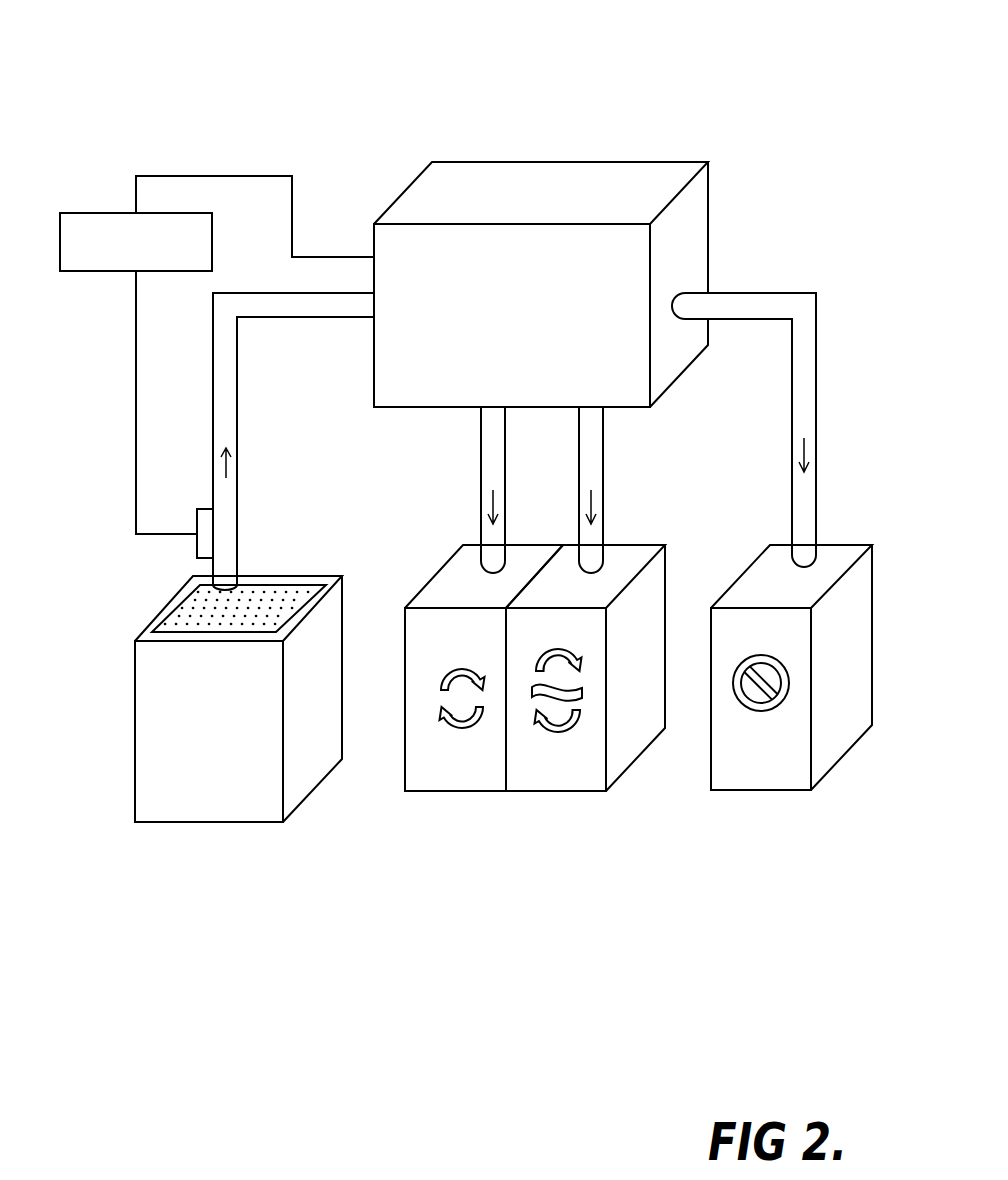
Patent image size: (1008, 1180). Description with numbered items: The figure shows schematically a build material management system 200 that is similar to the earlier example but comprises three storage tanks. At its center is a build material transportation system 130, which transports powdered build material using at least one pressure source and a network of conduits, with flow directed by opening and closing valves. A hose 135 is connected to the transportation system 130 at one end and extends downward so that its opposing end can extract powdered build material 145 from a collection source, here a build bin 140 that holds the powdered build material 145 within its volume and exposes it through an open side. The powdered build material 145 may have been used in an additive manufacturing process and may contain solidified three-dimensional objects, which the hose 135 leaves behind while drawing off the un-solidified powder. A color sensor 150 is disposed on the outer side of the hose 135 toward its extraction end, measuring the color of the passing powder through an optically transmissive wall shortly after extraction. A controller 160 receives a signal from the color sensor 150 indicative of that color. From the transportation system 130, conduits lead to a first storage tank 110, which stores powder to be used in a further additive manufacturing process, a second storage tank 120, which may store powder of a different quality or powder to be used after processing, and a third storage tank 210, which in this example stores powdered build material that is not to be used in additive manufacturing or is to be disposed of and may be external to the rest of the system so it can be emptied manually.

The build material management system 200 is at (278, 92).
The controller 160 is at (95, 213).
The color sensor 150 is at (197, 509).
The hose 135 is at (237, 532).
The powdered build material 145 is at (297, 595).
The build bin 140 is at (231, 806).
The build material transportation system 130 is at (538, 384).
The first storage tank 110 is at (484, 779).
The second storage tank 120 is at (575, 779).
The third storage tank 210 is at (782, 777).